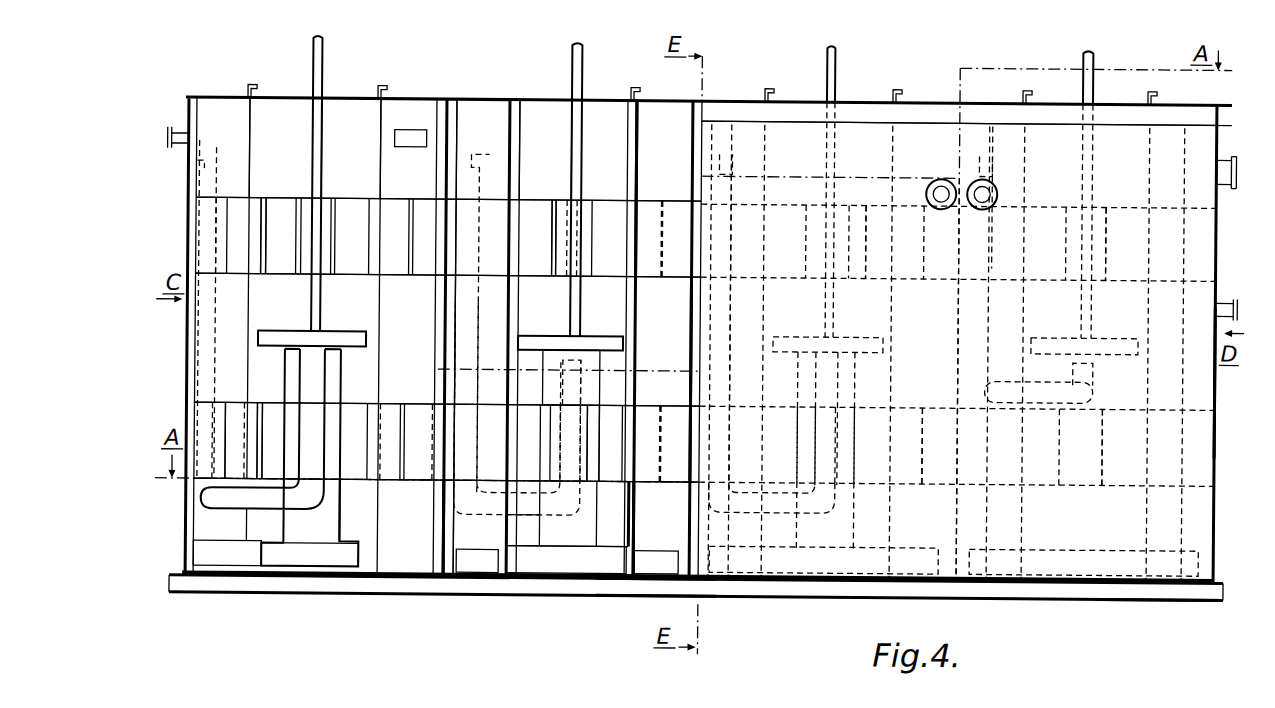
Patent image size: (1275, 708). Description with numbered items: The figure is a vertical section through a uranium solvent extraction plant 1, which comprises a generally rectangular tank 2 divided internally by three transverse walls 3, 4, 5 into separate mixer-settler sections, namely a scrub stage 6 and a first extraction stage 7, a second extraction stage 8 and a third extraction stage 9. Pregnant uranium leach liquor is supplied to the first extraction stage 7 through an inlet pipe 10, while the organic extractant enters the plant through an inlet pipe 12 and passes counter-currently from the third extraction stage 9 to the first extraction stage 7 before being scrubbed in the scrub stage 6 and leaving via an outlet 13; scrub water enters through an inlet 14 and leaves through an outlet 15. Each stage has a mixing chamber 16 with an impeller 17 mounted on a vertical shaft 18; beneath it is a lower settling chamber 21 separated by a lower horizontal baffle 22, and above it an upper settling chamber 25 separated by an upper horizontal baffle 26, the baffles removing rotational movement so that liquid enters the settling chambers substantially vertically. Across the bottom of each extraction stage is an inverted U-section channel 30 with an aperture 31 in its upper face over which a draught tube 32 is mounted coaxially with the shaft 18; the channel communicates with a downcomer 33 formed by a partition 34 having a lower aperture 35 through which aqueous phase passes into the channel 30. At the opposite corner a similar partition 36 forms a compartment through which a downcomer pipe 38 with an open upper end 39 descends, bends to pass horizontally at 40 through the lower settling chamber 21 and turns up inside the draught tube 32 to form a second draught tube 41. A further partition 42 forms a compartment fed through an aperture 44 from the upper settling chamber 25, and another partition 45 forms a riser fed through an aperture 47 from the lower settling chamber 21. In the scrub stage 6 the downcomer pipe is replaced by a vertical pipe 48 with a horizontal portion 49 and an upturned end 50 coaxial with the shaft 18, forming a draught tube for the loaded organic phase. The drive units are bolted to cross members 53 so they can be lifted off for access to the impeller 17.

The uranium solvent extraction plant 1 is at (1224, 434).
The tank 2 is at (684, 590).
The transverse wall 3 is at (962, 478).
The transverse wall 4 is at (693, 438).
The transverse wall 5 is at (449, 536).
The scrub stage 6 is at (1190, 372).
The first extraction stage 7 is at (812, 128).
The second extraction stage 8 is at (546, 110).
The third extraction stage 9 is at (341, 110).
The inlet pipe 10 is at (941, 174).
The inlet pipe 12 is at (178, 128).
The outlet 13 is at (1222, 150).
The inlet 14 is at (1227, 294).
The outlet 15 is at (990, 174).
The mixing chamber 16 is at (360, 315).
The impeller 17 is at (288, 332).
The vertical shaft 18 is at (323, 45).
The lower settling chamber 21 is at (377, 512).
The lower horizontal baffle 22 is at (398, 408).
The upper settling chamber 25 is at (340, 145).
The upper horizontal baffle 26 is at (355, 215).
The inverted U-section channel 30 is at (352, 562).
The aperture 31 is at (307, 543).
The draught tube 32 is at (350, 534).
The downcomer 33 is at (657, 528).
The partition 34 is at (640, 160).
The aperture 35 is at (657, 563).
The partition 36 is at (252, 142).
The downcomer pipe 38 is at (206, 356).
The open upper end 39 is at (213, 145).
The horizontal portion 40 is at (318, 400).
The second draught tube 41 is at (566, 378).
The partition 42 is at (440, 97).
The aperture 44 is at (408, 128).
The partition 45 is at (493, 179).
The aperture 47 is at (482, 565).
The vertical pipe 48 is at (995, 262).
The horizontal portion 49 is at (1046, 402).
The upturned end 50 is at (1097, 375).
The cross members 53 is at (250, 80).